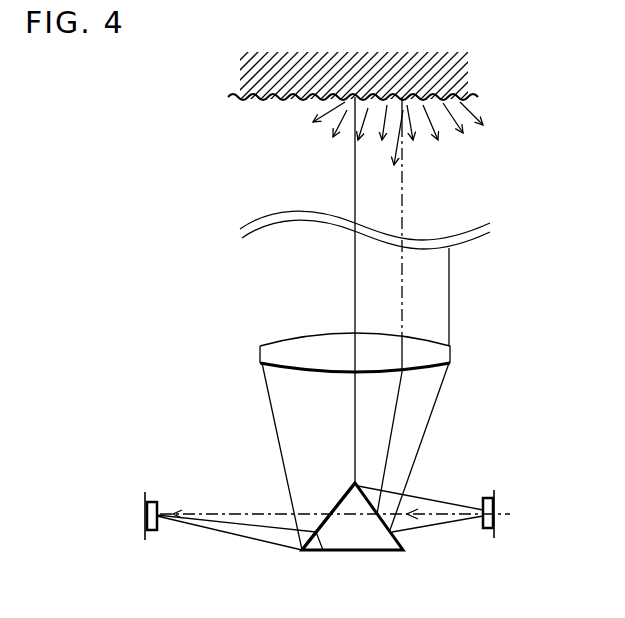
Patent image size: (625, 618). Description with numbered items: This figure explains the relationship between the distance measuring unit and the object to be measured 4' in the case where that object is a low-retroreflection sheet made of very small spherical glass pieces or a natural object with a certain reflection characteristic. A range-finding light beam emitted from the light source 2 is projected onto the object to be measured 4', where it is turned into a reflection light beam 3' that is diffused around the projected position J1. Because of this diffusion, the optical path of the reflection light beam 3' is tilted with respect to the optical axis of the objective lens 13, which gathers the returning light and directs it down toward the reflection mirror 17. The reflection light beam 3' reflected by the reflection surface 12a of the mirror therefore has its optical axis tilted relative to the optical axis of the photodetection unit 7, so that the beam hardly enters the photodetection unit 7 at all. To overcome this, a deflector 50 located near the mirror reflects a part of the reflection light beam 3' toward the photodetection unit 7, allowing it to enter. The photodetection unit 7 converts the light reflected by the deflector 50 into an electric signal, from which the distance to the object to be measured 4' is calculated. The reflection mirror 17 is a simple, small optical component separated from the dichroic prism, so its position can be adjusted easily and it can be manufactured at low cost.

The object to be measured 4' is at (331, 72).
The projected position J1 is at (404, 95).
The reflection light beam 3' is at (317, 323).
The objective lens 13 is at (451, 349).
The photodetection unit 7 is at (150, 492).
The light source 2 is at (486, 497).
The reflection surface 12a is at (340, 502).
The reflection mirror 17 is at (353, 552).
The deflector 50 is at (302, 550).